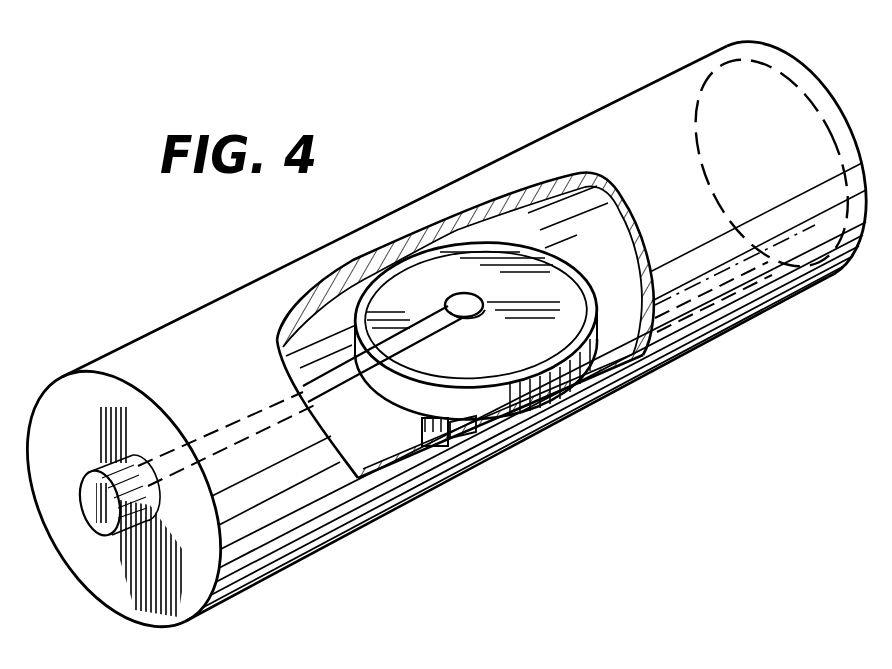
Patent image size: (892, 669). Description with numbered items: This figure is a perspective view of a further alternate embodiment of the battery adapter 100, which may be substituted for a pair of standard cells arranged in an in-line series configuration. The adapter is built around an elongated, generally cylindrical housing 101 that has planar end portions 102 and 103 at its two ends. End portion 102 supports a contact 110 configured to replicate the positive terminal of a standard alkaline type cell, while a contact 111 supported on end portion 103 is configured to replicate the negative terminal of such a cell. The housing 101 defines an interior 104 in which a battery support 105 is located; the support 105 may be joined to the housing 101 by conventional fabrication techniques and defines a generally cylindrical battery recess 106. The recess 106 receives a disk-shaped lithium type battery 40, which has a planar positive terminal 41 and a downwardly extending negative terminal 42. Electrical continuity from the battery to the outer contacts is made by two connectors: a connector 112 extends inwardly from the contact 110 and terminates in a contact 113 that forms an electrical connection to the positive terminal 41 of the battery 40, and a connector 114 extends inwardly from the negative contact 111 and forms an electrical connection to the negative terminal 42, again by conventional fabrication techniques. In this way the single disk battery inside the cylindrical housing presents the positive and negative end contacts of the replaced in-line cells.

The battery adapter 100 is at (518, 540).
The housing 101 is at (280, 527).
The end portion 102 is at (192, 592).
The end portion 103 is at (833, 103).
The interior 104 is at (630, 335).
The battery support 105 is at (545, 395).
The battery recess 106 is at (565, 276).
The contact 110 is at (100, 520).
The contact 111 is at (777, 97).
The connector 112 is at (343, 363).
The contact 113 is at (462, 294).
The connector 114 is at (432, 447).
The lithium type battery 40 is at (527, 345).
The positive terminal 41 is at (393, 282).
The negative terminal 42 is at (488, 448).